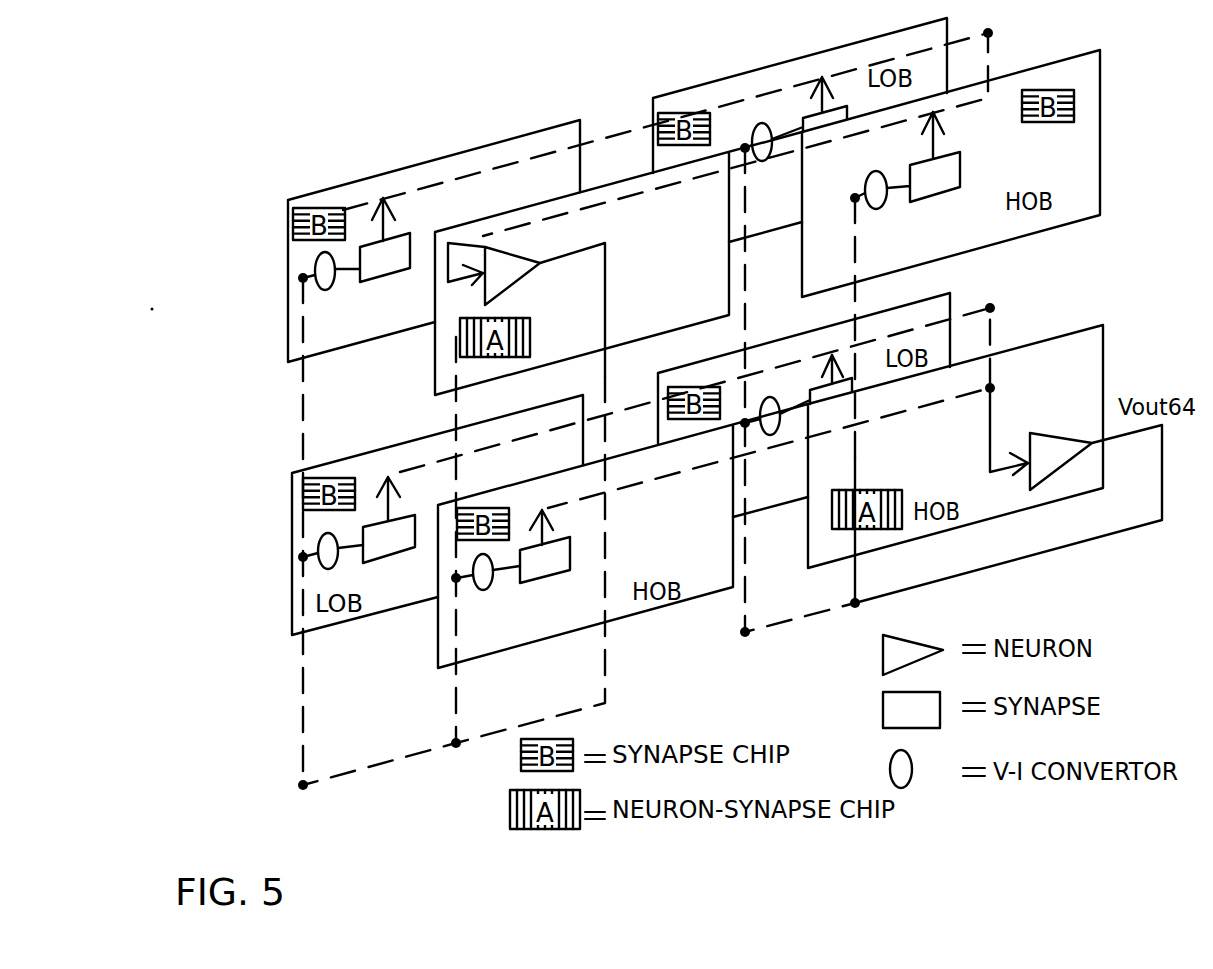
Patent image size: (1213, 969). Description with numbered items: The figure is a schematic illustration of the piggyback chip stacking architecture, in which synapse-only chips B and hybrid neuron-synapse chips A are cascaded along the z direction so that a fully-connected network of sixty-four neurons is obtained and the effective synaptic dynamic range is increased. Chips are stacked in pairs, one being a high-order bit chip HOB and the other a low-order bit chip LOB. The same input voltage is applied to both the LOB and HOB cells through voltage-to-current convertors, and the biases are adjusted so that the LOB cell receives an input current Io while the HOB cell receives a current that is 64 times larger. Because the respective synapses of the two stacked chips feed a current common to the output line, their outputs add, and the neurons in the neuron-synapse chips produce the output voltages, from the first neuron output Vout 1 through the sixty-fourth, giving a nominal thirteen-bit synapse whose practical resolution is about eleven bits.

The input current Io is at (363, 562).
The current ratio factor 64 is at (516, 583).
The neuron output voltage 1 is at (552, 294).
The low-order bit chip LOB is at (434, 241).
The high-order bit chip HOB is at (618, 263).